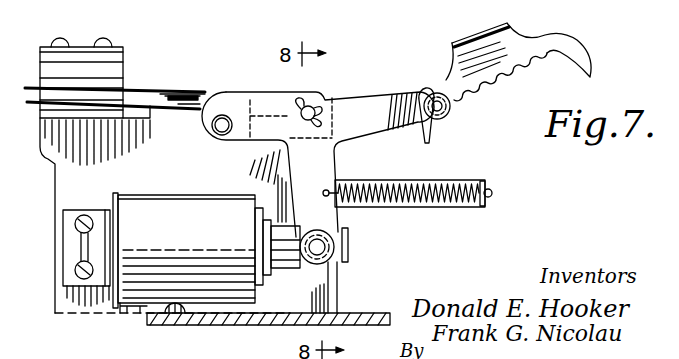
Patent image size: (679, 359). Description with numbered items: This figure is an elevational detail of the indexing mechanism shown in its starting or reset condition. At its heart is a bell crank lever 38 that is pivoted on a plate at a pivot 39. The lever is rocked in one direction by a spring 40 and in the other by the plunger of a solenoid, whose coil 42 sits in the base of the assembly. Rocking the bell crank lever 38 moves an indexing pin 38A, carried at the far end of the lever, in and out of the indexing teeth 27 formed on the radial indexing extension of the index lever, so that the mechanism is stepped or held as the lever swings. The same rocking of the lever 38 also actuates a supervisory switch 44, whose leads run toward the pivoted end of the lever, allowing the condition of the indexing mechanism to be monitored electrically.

The indexing teeth 27 is at (524, 57).
The bell crank lever 38 is at (383, 122).
The indexing pin 38A is at (431, 84).
The pivot 39 is at (325, 97).
The spring 40 is at (437, 180).
The coil 42 is at (190, 234).
The supervisory switch 44 is at (139, 92).